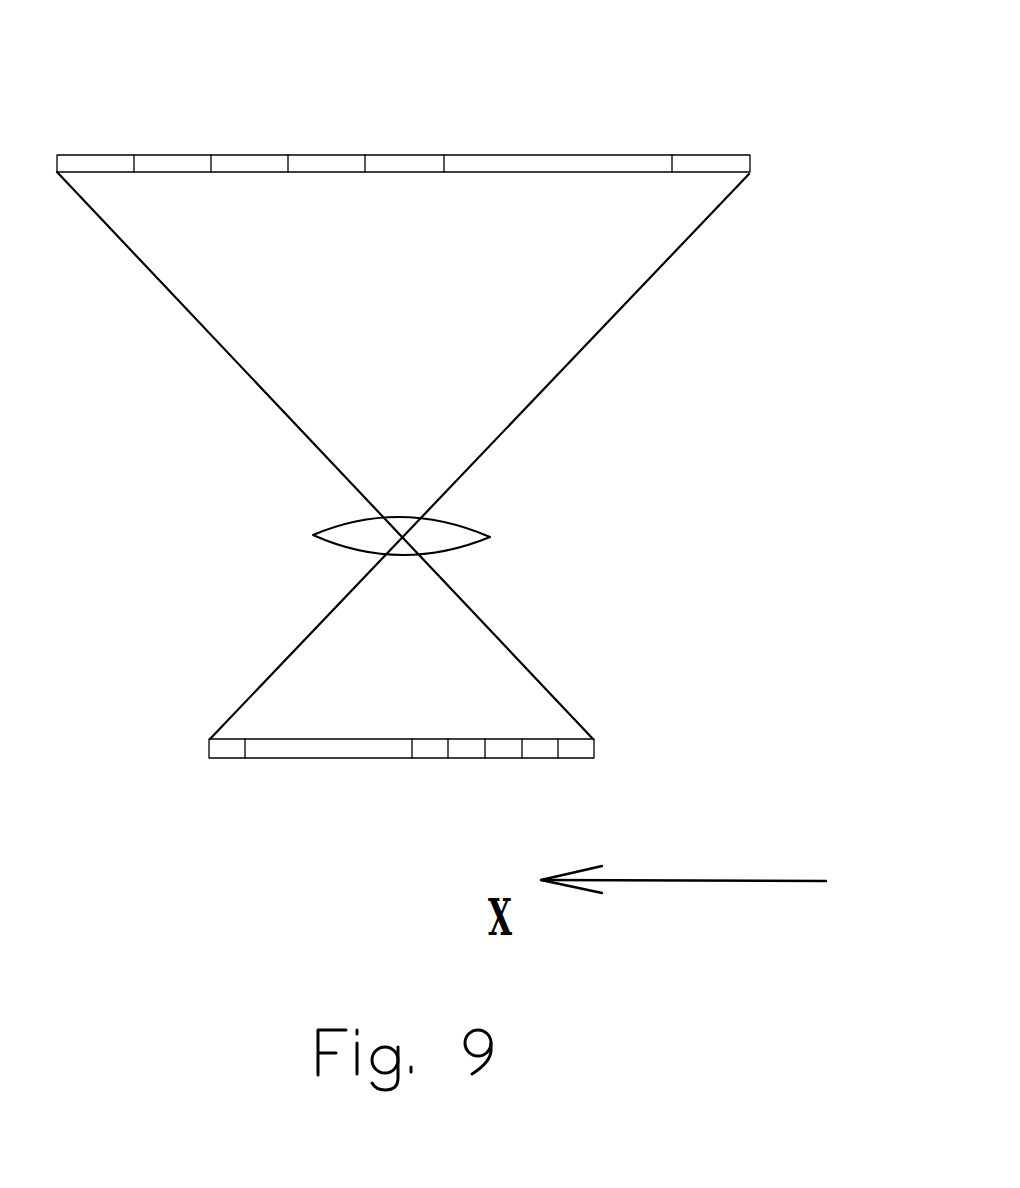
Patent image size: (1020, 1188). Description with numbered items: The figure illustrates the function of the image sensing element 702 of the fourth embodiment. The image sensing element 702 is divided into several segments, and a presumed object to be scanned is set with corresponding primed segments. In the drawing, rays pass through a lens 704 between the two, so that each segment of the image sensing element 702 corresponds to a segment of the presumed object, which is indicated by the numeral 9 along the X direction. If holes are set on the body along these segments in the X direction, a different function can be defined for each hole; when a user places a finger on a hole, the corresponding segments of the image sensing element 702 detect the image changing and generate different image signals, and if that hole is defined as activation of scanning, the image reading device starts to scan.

The image pixel array 9 is at (531, 165).
The image sensing element 702 is at (310, 748).
The lens 704 is at (443, 534).